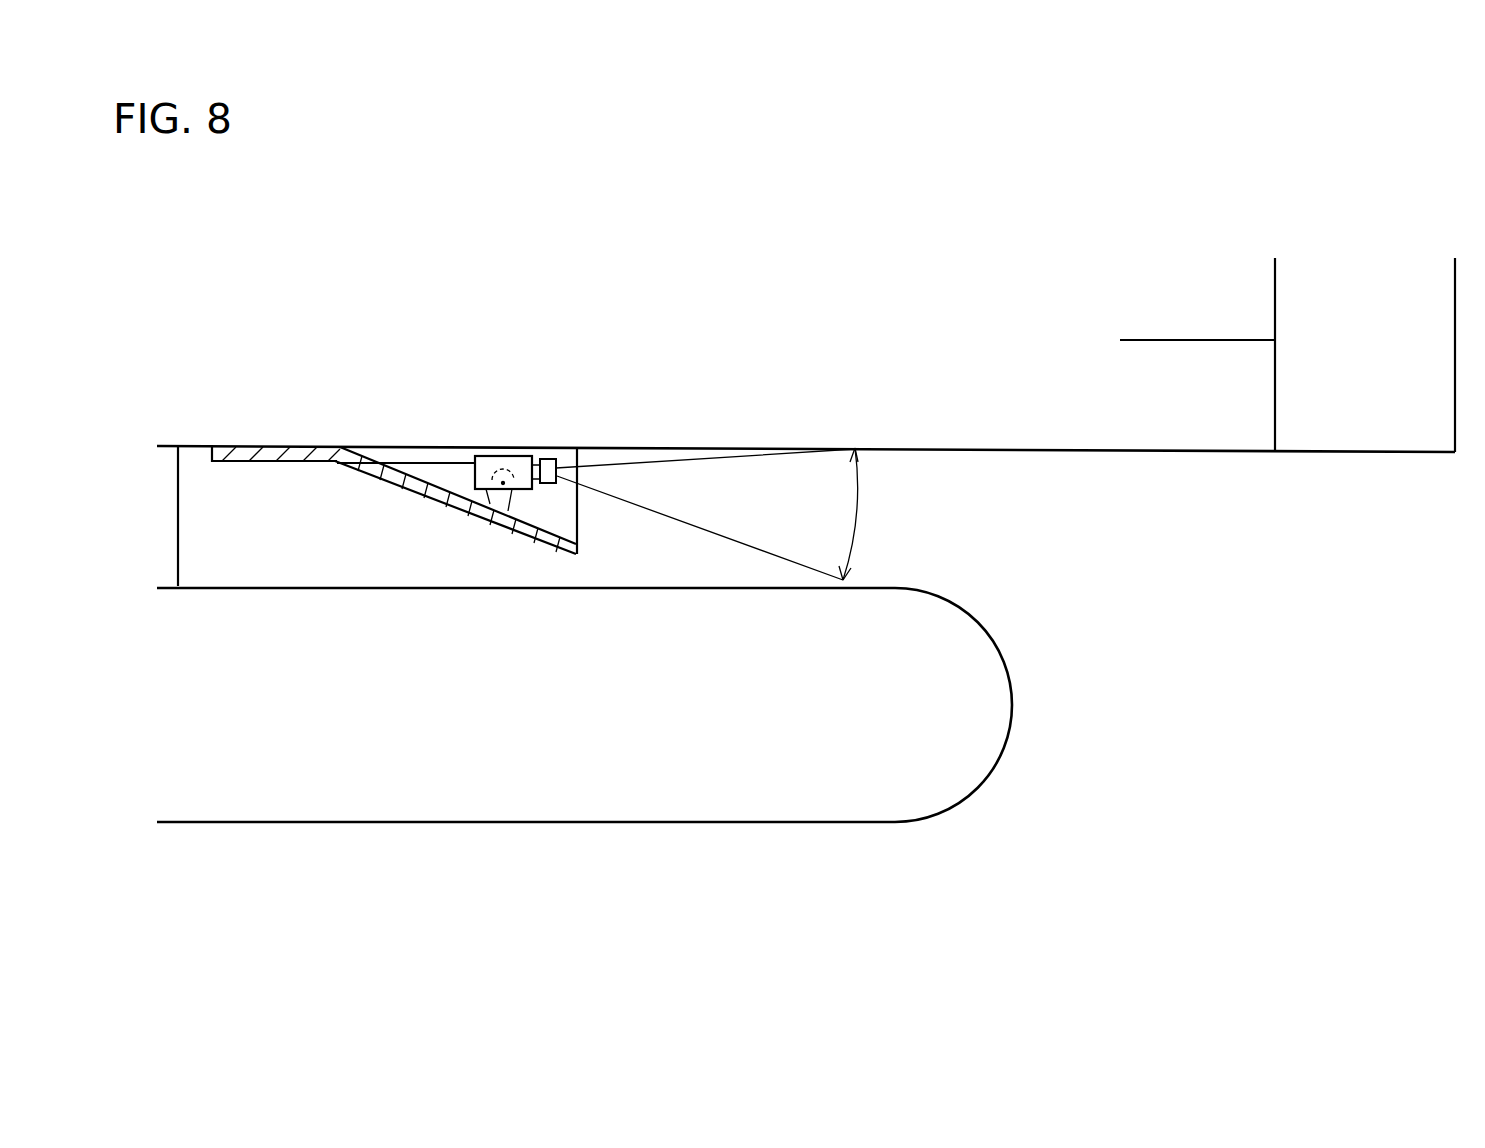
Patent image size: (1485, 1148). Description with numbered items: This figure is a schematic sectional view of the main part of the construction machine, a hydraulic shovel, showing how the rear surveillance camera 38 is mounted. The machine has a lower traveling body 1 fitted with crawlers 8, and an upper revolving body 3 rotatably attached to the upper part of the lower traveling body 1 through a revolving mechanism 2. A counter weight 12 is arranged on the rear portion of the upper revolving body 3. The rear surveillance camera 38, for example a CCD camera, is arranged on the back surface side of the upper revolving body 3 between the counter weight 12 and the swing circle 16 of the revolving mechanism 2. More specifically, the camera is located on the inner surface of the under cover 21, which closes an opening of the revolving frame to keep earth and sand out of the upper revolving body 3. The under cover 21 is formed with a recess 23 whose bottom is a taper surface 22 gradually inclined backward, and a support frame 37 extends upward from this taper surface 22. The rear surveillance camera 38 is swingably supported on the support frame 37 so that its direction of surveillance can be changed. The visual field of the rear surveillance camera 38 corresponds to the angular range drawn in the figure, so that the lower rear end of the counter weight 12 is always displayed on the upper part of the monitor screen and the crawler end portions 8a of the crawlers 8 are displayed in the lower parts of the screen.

The lower traveling body 1 is at (663, 745).
The revolving mechanism 2 is at (180, 497).
The upper revolving body 3 is at (1031, 453).
The crawler 8 is at (843, 822).
The crawler end portion 8a is at (970, 798).
The counter weight 12 is at (1383, 420).
The swing circle 16 is at (180, 555).
The under cover 21 is at (350, 474).
The taper surface 22 is at (450, 490).
The recess 23 is at (415, 462).
The support frame 37 is at (498, 498).
The rear surveillance camera 38 is at (505, 463).